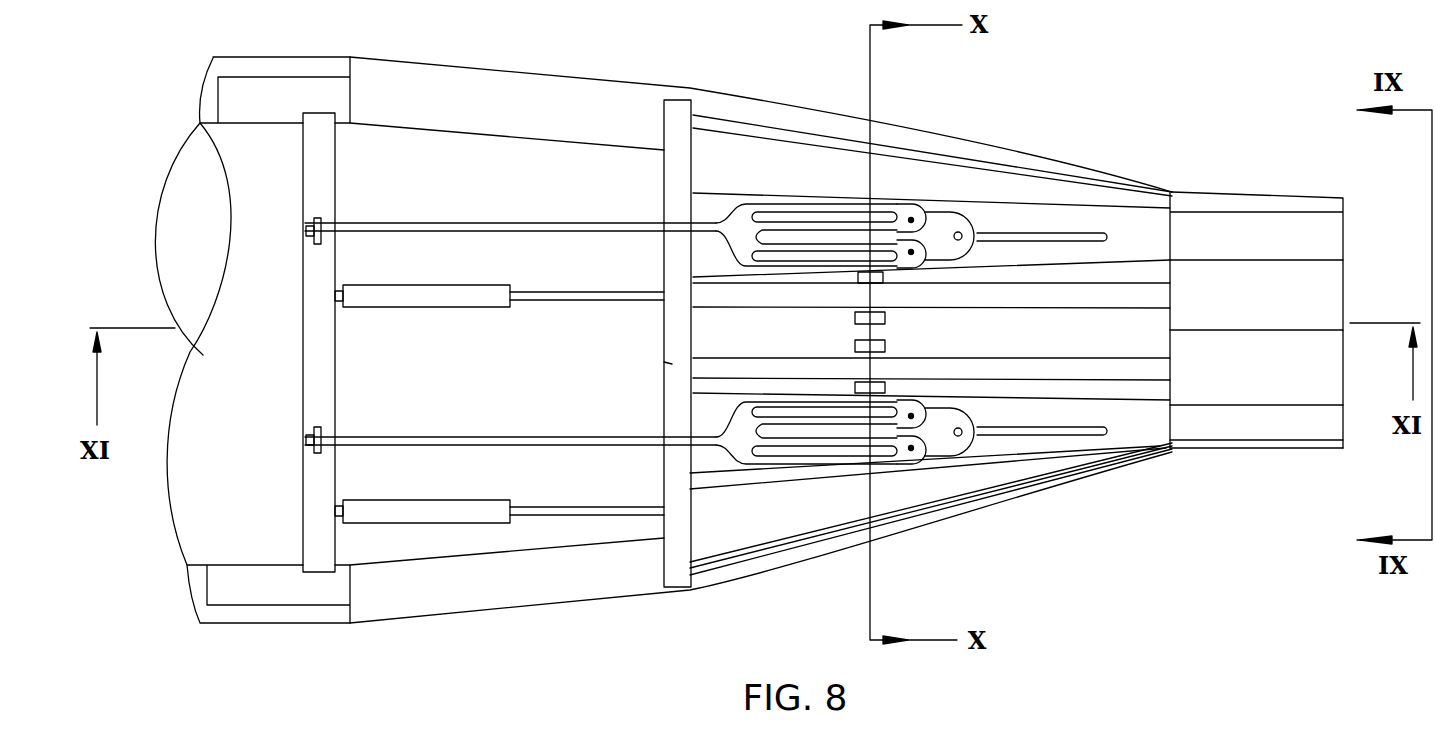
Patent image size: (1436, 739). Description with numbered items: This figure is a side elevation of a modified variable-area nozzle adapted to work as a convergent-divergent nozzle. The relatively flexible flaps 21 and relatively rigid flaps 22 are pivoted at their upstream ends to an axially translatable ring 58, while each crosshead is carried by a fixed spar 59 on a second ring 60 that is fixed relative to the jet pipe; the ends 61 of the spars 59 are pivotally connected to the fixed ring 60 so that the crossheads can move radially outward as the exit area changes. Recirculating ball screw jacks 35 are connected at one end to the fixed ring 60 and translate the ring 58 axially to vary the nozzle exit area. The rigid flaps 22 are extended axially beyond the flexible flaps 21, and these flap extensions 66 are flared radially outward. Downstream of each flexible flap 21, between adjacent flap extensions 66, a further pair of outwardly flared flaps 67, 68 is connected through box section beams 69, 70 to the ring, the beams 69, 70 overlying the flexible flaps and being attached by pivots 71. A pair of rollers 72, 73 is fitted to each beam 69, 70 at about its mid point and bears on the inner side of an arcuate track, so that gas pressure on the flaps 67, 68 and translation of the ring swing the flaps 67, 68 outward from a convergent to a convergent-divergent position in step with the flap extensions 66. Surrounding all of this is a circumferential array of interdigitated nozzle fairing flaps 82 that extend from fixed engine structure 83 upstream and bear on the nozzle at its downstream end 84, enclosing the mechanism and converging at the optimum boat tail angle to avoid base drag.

The flexible flap 21 is at (1135, 395).
The rigid flap 22 is at (1150, 222).
The recirculating ball screw jack 35 is at (400, 513).
The axially translatable ring 58 is at (673, 362).
The fixed spar 59 is at (431, 230).
The fixed ring 60 is at (325, 148).
The spar end 61 is at (305, 228).
The flap extension 66 is at (1330, 230).
The outwardly flared flap 67 is at (1328, 297).
The outwardly flared flap 68 is at (1323, 365).
The box section beam 69 is at (978, 300).
The box section beam 70 is at (1080, 368).
The pivot 71 is at (688, 292).
The roller 72 is at (857, 320).
The roller 73 is at (863, 275).
The nozzle fairing flap 82 is at (507, 70).
The fixed engine structure 83 is at (332, 55).
The nozzle downstream end 84 is at (1200, 202).